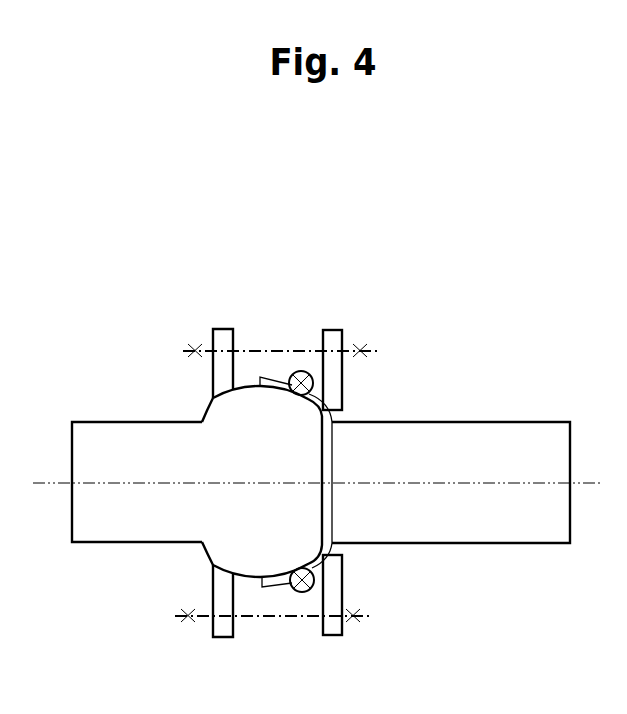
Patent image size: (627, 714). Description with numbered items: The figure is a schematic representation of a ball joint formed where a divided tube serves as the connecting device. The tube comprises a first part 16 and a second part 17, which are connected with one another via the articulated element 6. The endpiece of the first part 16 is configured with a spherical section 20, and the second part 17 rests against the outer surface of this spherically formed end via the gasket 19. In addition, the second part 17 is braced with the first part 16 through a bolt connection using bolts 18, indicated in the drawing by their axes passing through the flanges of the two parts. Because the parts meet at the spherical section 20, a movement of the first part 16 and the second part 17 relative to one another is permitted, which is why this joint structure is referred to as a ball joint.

The articulated element 6 is at (135, 373).
The first part 16 is at (157, 525).
The second part 17 is at (442, 524).
The bolts 18 is at (277, 348).
The gasket 19 is at (310, 374).
The spherical section 20 is at (292, 552).